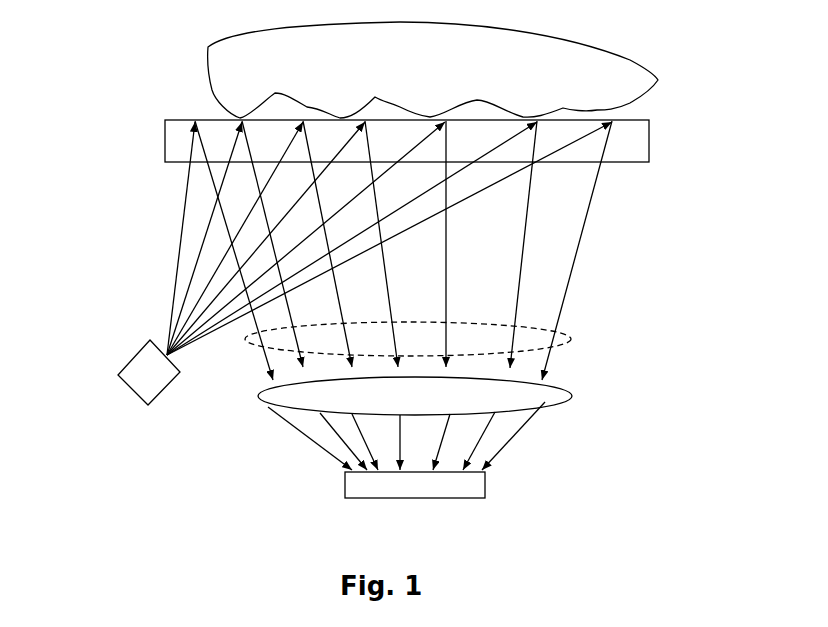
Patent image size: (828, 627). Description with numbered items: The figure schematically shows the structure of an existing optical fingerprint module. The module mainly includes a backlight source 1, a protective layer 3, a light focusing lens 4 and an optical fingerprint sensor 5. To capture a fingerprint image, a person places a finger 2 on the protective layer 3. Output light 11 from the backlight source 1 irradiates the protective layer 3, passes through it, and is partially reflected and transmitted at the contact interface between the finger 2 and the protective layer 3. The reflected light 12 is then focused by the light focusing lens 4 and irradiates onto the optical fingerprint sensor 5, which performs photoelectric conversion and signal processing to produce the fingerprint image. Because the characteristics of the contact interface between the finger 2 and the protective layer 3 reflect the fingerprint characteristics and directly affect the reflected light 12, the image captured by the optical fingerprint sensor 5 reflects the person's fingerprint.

The backlight source 1 is at (150, 385).
The finger 2 is at (636, 82).
The protective layer 3 is at (636, 152).
The light focusing lens 4 is at (572, 395).
The optical fingerprint sensor 5 is at (478, 485).
The output light 11 is at (167, 318).
The reflected light 12 is at (572, 330).